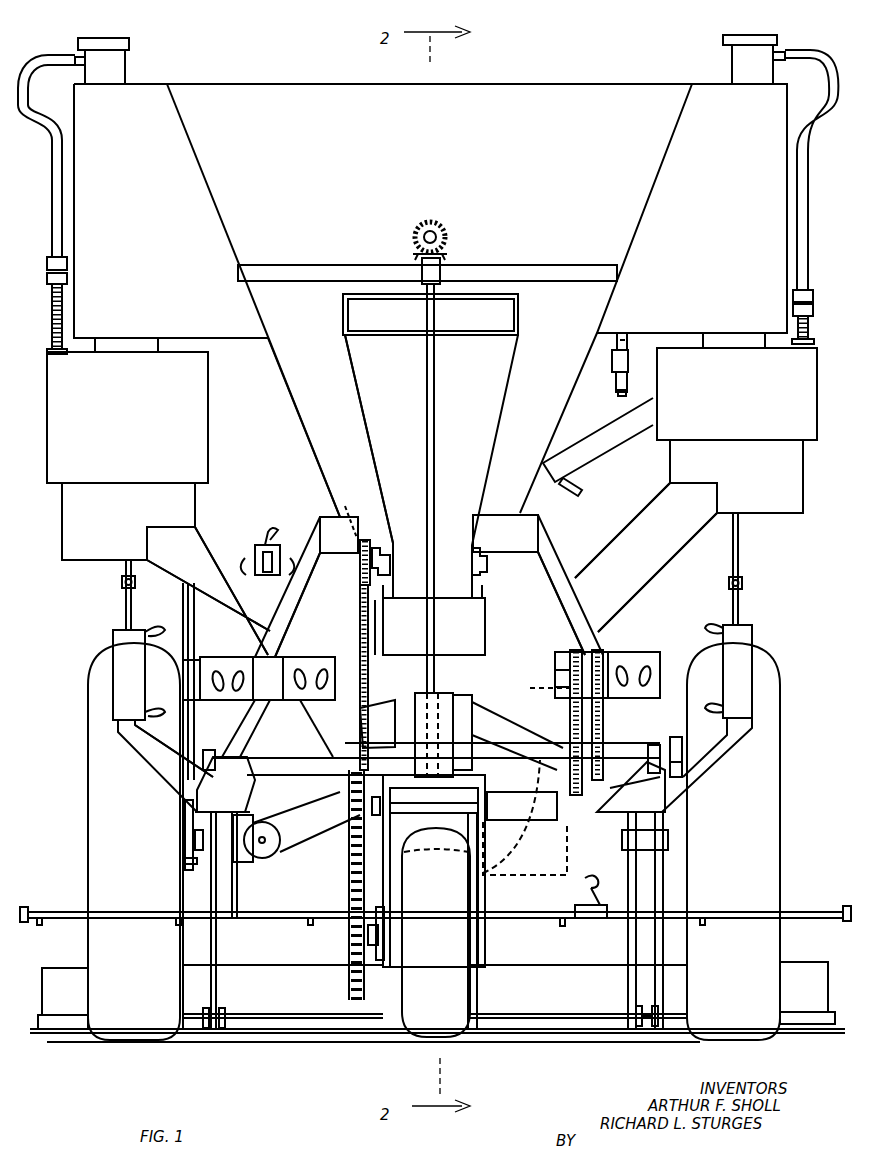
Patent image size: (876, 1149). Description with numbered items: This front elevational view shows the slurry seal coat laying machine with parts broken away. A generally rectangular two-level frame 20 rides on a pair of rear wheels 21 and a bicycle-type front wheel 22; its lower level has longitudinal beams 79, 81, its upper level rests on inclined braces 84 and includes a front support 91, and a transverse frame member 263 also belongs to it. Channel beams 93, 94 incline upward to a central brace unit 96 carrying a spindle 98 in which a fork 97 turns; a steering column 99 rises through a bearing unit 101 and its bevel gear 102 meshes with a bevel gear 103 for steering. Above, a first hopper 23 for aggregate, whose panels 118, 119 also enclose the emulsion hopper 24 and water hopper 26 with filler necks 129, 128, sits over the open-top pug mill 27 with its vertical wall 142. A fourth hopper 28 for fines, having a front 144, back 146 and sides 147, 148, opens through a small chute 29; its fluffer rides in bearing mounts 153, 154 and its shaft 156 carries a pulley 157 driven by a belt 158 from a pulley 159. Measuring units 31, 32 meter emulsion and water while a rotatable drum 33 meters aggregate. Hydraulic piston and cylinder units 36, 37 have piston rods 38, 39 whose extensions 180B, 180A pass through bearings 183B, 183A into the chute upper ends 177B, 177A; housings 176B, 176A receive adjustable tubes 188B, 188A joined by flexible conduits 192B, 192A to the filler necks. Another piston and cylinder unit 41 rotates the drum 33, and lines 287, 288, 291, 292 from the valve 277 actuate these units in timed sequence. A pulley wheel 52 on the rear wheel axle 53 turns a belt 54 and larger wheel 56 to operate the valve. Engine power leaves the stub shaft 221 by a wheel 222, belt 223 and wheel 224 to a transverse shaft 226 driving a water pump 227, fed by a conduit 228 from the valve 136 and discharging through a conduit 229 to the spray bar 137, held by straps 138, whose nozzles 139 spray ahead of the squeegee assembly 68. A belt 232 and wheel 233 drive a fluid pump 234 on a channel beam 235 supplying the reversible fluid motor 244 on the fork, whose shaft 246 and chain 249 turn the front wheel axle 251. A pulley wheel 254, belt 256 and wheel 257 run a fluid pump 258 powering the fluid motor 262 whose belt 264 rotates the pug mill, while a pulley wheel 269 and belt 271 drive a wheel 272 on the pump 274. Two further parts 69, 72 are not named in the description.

The frame 20 is at (690, 812).
The rear wheels 21 is at (98, 789).
The front wheel 22 is at (457, 1002).
The first hopper 23 is at (321, 97).
The second hopper 24 is at (151, 97).
The third hopper 26 is at (712, 93).
The pug mill 27 is at (521, 634).
The fourth hopper 28 is at (495, 368).
The chute 29 is at (478, 606).
The cylindrical measuring unit 31 is at (54, 552).
The cylindrical measuring unit 32 is at (812, 526).
The rotatable drum 33 is at (518, 628).
The hydraulic piston and cylinder unit 36 is at (112, 690).
The hydraulic piston and cylinder unit 37 is at (752, 640).
The piston rod 38 is at (125, 610).
The piston rod 39 is at (742, 610).
The piston and cylinder unit 41 is at (600, 442).
The pulley wheel 52 is at (183, 866).
The rear wheel axle 53 is at (184, 842).
The belt 54 is at (196, 815).
The larger wheel 56 is at (183, 608).
The squeegee assembly 68 is at (250, 1051).
The skid block 69 is at (58, 976).
The base plate 72 is at (325, 1042).
The longitudinal beam 79 is at (652, 764).
The longitudinal beam 81 is at (193, 782).
The inclined braces 84 is at (285, 612).
The front support 91 is at (330, 530).
The channel beam 93 is at (484, 700).
The channel beam 94 is at (229, 772).
The brace unit 96 is at (410, 700).
The fork 97 is at (490, 890).
The spindle 98 is at (453, 733).
The steering column 99 is at (437, 438).
The bearing unit 101 is at (440, 270).
The bevel gear 102 is at (441, 252).
The bevel gear 103 is at (441, 232).
The panel 118 is at (630, 244).
The panel 119 is at (312, 444).
The filler neck 128 is at (730, 52).
The filler neck 129 is at (127, 56).
The valve 136 is at (612, 366).
The spray bar 137 is at (72, 912).
The straps 138 is at (237, 900).
The nozzles 139 is at (562, 920).
The vertical wall 142 is at (503, 854).
The front 144 is at (374, 420).
The back 146 is at (352, 302).
The side 147 is at (345, 313).
The side 148 is at (518, 312).
The bearing mount 153 is at (470, 566).
The bearing mount 154 is at (388, 570).
The shaft 156 is at (372, 546).
The pulley 157 is at (359, 540).
The belt 158 is at (372, 632).
The pulley 159 is at (376, 650).
The circular housing 176A is at (817, 436).
The circular housing 176B is at (208, 428).
The upper end of chute 177A is at (672, 478).
The upper end of chute 177B is at (197, 510).
The extension 180A is at (742, 583).
The extension 180B is at (121, 582).
The bearing 183A is at (720, 344).
The bearing 183B is at (160, 346).
The tube 188A is at (810, 322).
The tube 188B is at (52, 315).
The flexible conduit 192A is at (808, 184).
The flexible conduit 192B is at (54, 182).
The engine stub shaft 221 is at (530, 690).
The wheel 222 is at (565, 668).
The belt 223 is at (573, 720).
The wheel 224 is at (565, 745).
The transverse shaft 226 is at (653, 745).
The water pump 227 is at (683, 748).
The conduit 228 is at (620, 397).
The conduit 229 is at (604, 915).
The belt 232 is at (603, 705).
The wheel 233 is at (586, 664).
The fluid pump 234 is at (652, 664).
The channel beam 235 is at (269, 692).
The reversible fluid motor 244 is at (527, 822).
The shaft 246 is at (455, 806).
The chain 249 is at (348, 984).
The front wheel axle 251 is at (348, 944).
The pulley wheel 254 is at (178, 756).
The belt 256 is at (118, 750).
The wheel 257 is at (196, 658).
The fluid pump 258 is at (240, 656).
The fluid motor 262 is at (260, 822).
The transverse frame member 263 is at (178, 796).
The belt 264 is at (349, 877).
The pulley wheel 269 is at (335, 757).
The belt 271 is at (330, 722).
The wheel 272 is at (307, 636).
The pump 274 is at (314, 664).
The valve 277 is at (258, 542).
The line 287 is at (722, 631).
The line 288 is at (145, 713).
The line 291 is at (580, 494).
The line 292 is at (145, 632).